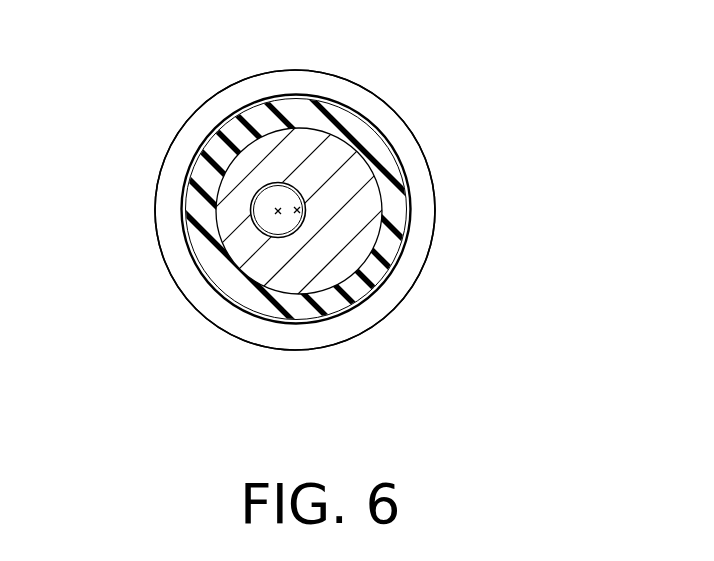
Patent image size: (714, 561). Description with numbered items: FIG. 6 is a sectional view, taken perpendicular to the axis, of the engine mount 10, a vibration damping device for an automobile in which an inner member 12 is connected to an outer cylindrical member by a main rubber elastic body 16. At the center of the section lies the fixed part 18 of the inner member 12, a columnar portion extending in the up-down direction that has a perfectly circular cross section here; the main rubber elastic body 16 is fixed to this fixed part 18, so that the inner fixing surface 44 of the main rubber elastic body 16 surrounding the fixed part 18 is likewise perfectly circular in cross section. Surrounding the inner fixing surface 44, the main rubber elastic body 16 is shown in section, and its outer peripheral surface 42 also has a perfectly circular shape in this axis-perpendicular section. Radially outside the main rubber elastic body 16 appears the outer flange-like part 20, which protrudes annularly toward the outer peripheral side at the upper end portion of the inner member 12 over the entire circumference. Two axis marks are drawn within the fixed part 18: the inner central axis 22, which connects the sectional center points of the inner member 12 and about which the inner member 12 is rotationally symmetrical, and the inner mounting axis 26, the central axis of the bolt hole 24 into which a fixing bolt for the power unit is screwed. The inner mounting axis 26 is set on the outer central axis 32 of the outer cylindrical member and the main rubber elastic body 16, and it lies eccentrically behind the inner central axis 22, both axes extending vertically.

The engine mount 10 is at (436, 92).
The inner member 12 is at (162, 153).
The main rubber elastic body 16 is at (342, 101).
The fixed part 18 is at (297, 272).
The outer flange-like part 20 is at (413, 263).
The inner central axis 22 is at (297, 206).
The bolt hole 24 is at (275, 226).
The inner mounting axis 26 is at (278, 207).
The outer central axis 32 is at (278, 210).
The outer peripheral surface 42 is at (184, 232).
The inner fixing surface 44 is at (372, 168).